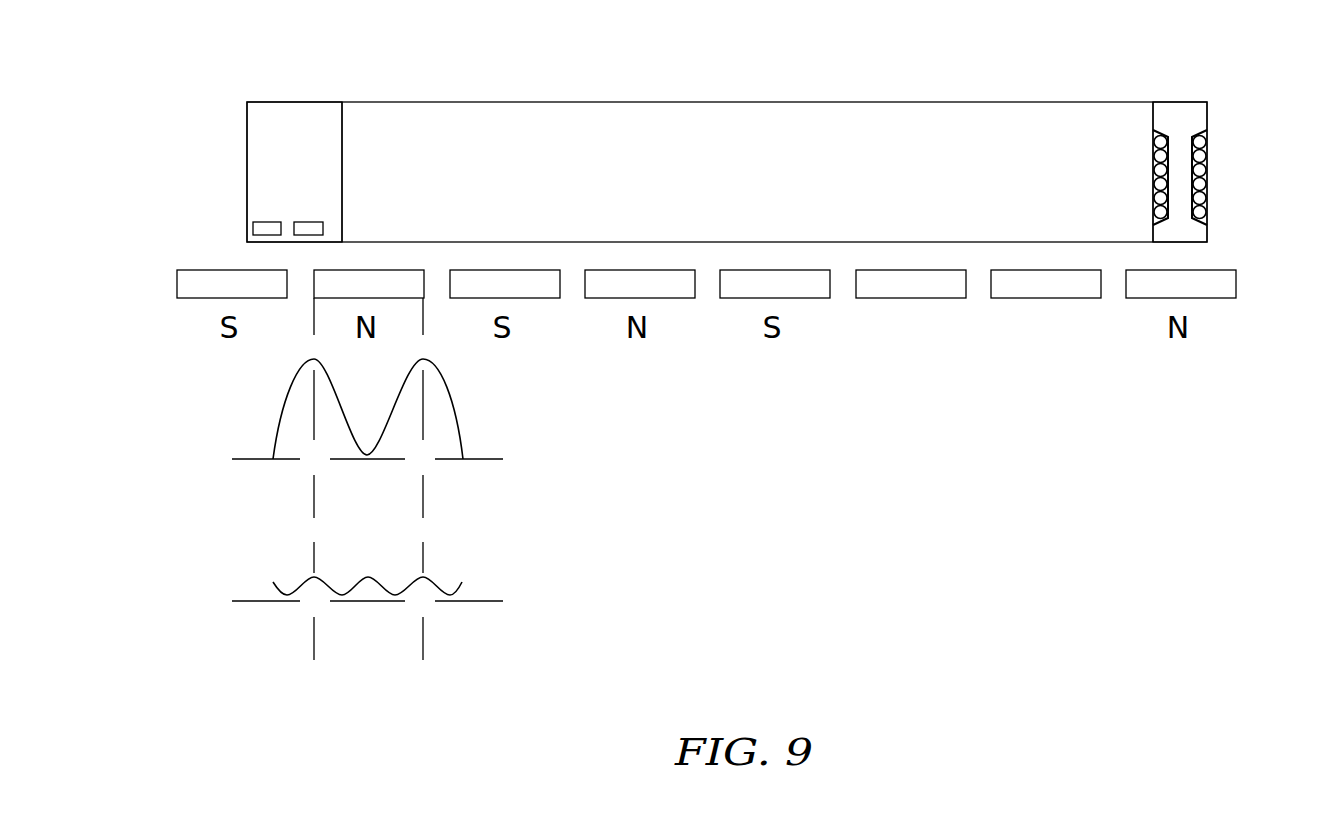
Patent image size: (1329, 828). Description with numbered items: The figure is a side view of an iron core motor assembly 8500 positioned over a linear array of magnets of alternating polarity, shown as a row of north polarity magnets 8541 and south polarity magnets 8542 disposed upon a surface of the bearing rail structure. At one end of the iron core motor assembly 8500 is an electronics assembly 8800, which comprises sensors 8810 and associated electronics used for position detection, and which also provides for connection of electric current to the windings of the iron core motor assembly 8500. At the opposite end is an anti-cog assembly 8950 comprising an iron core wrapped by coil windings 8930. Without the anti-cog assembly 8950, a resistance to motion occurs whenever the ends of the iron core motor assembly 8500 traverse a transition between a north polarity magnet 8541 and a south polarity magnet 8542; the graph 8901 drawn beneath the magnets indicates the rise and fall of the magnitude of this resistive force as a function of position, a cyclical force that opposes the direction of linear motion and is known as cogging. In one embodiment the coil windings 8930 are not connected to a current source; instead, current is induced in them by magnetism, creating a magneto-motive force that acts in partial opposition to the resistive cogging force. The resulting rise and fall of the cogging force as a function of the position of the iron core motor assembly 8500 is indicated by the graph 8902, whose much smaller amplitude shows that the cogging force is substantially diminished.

The iron core motor assembly 8500 is at (661, 120).
The electronics assembly 8800 is at (284, 120).
The sensors 8810 is at (307, 220).
The anti-cog assembly 8950 is at (1175, 120).
The coil windings 8930 is at (1203, 197).
The north polarity magnet 8541 is at (945, 282).
The south polarity magnet 8542 is at (1068, 282).
The graph 8901 is at (483, 412).
The graph 8902 is at (448, 572).